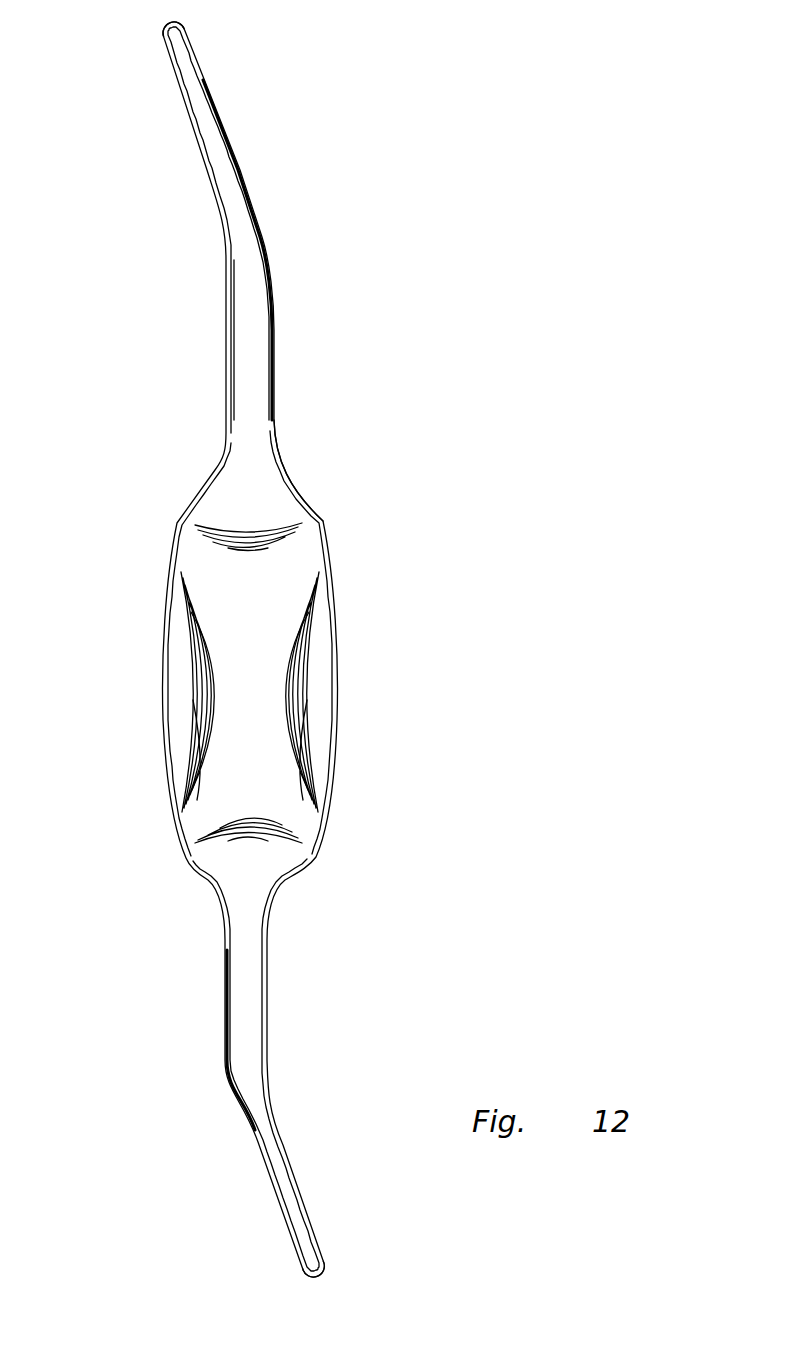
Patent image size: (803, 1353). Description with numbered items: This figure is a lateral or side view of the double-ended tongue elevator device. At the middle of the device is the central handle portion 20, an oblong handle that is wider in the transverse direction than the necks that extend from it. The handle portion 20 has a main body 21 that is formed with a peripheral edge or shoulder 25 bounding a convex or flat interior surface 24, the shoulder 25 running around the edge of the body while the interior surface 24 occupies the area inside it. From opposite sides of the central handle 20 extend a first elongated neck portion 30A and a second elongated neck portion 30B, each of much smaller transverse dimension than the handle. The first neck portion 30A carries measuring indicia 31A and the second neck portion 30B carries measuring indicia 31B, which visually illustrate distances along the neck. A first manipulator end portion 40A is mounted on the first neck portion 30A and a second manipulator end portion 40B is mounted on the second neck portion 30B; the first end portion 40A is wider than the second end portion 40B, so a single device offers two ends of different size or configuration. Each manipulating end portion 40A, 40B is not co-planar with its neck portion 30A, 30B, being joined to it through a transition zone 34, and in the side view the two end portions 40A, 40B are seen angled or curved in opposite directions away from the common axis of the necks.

The central handle portion 20 is at (382, 610).
The main body 21 is at (322, 521).
The interior surface 24 is at (180, 684).
The peripheral edge or shoulder 25 is at (283, 783).
The first elongated neck portion 30A is at (207, 323).
The second elongated neck portion 30B is at (316, 1074).
The measuring indicia 31A is at (269, 262).
The measuring indicia 31B is at (268, 1180).
The transition zone 34 is at (250, 290).
The first manipulator end portion 40A is at (153, 88).
The second manipulator end portion 40B is at (360, 1254).